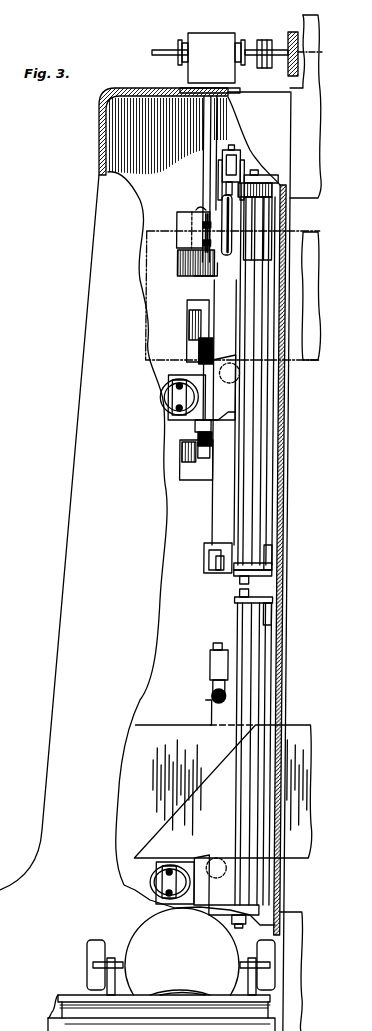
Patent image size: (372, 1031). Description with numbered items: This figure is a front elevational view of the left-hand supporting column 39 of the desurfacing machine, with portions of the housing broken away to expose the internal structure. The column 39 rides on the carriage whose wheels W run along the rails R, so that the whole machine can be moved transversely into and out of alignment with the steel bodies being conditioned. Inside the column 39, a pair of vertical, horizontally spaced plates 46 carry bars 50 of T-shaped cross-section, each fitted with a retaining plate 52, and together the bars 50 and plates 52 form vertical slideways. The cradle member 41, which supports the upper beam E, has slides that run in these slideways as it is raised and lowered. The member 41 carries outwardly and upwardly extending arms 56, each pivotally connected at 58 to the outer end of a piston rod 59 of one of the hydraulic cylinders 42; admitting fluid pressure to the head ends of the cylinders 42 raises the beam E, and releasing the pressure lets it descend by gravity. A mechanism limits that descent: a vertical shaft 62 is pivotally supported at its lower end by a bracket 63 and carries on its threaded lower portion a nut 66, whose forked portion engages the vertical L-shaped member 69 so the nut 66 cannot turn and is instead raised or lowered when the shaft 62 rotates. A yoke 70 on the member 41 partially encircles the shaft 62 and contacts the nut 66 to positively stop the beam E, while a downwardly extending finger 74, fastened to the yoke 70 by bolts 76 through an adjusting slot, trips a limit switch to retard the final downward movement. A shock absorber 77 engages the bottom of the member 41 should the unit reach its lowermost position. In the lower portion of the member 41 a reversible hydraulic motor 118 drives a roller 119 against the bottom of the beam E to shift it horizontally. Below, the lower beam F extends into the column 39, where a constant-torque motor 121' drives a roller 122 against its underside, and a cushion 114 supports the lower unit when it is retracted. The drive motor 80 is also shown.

The column 39 is at (66, 485).
The motor 80 is at (208, 46).
The vertical shaft 62 is at (203, 164).
The arm 56 is at (231, 155).
The pivotal connection 58 is at (245, 178).
The piston rod 59 is at (222, 200).
The yoke 70 is at (200, 210).
The finger 74 is at (185, 222).
The bolts 76 is at (205, 238).
The upper beam E is at (152, 320).
The cradle member 41 is at (230, 298).
The L-shaped member 69 is at (196, 318).
The hydraulic fluid-operated motor 118 is at (151, 404).
The roller 119 is at (238, 374).
The nut 66 is at (198, 426).
The bracket 63 is at (192, 462).
The cylinder 42 is at (228, 498).
The plate 46 is at (270, 424).
The bar 50 is at (252, 448).
The retaining plate 52 is at (240, 466).
The shock absorber 77 is at (230, 572).
The lower beam F is at (128, 806).
The roller 122 is at (221, 858).
The constant-torque motor 121' is at (175, 885).
The cushion 114 is at (235, 915).
The wheels W is at (176, 990).
The rails R is at (70, 1000).